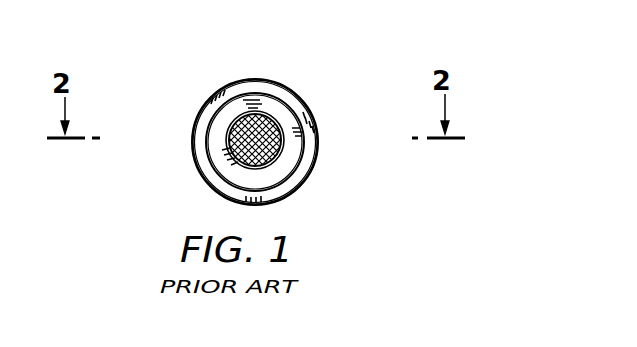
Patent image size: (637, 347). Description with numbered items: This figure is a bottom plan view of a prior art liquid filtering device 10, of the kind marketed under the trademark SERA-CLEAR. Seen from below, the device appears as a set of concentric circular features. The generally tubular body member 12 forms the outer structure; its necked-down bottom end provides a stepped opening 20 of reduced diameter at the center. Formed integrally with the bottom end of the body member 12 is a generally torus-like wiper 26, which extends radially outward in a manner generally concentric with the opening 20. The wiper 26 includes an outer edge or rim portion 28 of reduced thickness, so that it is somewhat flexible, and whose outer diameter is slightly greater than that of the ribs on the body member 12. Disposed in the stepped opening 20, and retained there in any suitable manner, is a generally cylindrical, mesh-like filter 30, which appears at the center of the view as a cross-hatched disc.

The liquid filtering device 10 is at (332, 137).
The tubular body member 12 is at (202, 172).
The stepped opening 20 is at (242, 118).
The wiper 26 is at (300, 147).
The rim portion 28 is at (300, 175).
The filter 30 is at (272, 117).